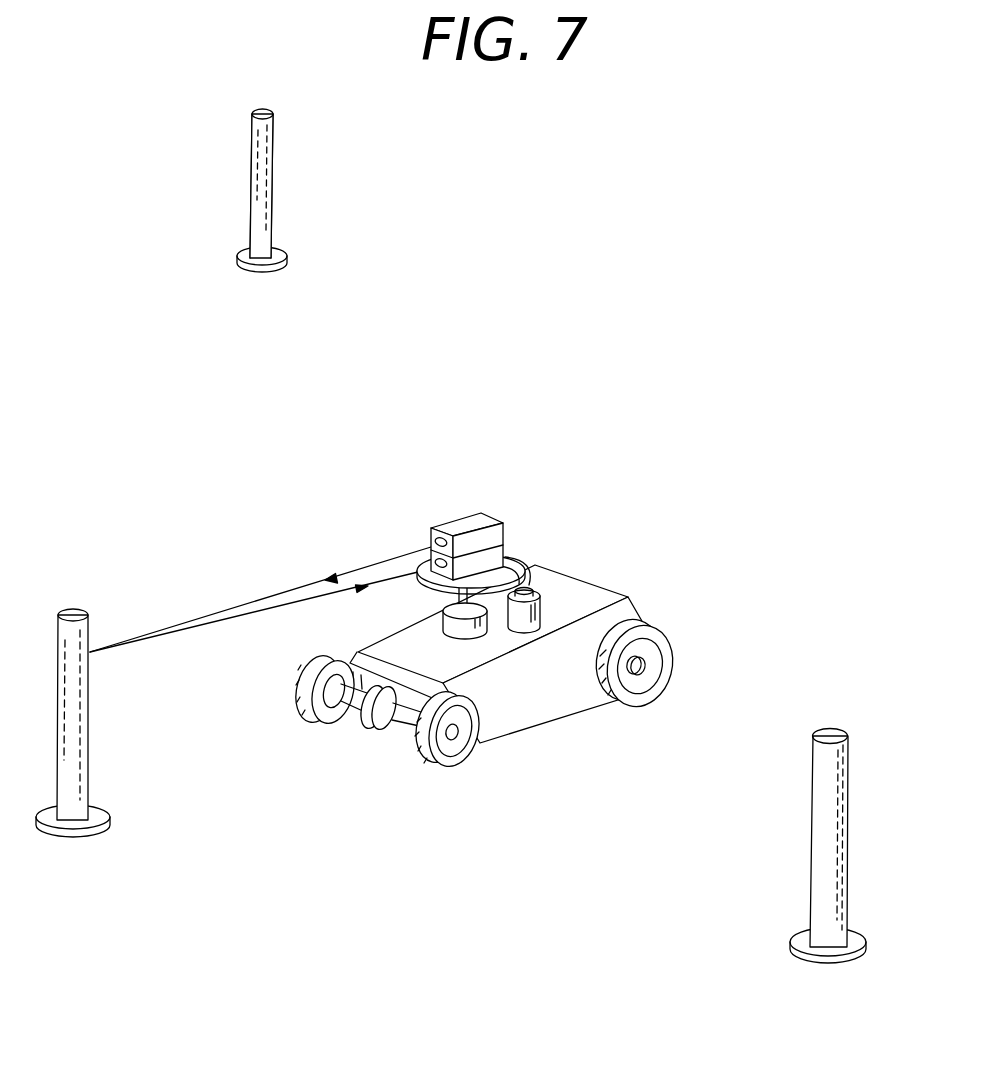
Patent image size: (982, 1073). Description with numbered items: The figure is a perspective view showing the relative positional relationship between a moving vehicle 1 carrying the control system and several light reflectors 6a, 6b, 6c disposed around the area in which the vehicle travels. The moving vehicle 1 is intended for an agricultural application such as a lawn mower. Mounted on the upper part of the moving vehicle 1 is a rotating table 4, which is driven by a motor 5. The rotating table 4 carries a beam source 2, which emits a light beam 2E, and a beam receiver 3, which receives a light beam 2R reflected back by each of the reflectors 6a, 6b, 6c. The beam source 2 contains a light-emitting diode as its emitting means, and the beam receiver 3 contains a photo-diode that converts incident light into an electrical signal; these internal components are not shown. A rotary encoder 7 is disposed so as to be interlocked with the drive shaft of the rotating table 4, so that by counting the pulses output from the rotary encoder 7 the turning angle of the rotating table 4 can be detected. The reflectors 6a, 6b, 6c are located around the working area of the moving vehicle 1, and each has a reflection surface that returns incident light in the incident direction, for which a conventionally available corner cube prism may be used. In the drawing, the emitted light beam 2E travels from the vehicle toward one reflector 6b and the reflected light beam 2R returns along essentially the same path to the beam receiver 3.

The moving vehicle 1 is at (550, 712).
The beam source 2 is at (460, 516).
The beam receiver 3 is at (497, 558).
The rotating table 4 is at (504, 567).
The motor 5 is at (540, 607).
The rotary encoder 7 is at (443, 620).
The reflector 6a is at (273, 155).
The reflector 6b is at (90, 745).
The reflector 6c is at (812, 795).
The light beam 2E is at (236, 600).
The light beam 2R is at (228, 622).